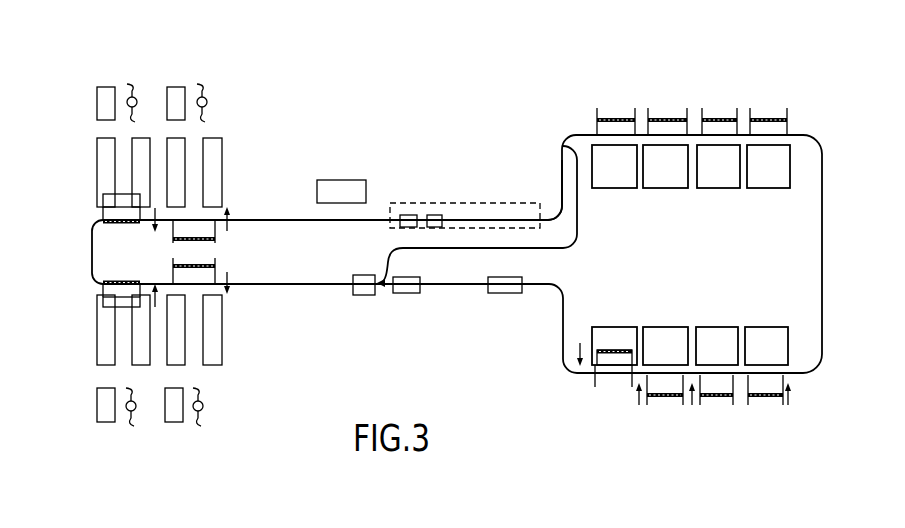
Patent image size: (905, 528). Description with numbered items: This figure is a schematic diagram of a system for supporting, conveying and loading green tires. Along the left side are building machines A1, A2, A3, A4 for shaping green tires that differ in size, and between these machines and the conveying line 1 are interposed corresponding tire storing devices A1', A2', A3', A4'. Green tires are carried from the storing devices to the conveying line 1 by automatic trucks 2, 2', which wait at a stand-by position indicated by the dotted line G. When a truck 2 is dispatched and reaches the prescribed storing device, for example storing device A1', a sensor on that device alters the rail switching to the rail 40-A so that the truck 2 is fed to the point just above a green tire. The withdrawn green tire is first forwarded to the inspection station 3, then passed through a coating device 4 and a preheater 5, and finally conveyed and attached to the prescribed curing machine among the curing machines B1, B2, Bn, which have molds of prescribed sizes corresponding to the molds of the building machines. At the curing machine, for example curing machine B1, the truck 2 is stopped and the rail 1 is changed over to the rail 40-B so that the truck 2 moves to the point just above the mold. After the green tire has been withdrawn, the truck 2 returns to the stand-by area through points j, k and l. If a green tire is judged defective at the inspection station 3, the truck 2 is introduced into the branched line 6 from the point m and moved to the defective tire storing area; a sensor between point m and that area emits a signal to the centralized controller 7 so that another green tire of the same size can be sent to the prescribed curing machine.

The conveying line 1 is at (277, 286).
The automatic truck 2 is at (408, 199).
The automatic truck 2' is at (439, 199).
The inspection station 3 is at (358, 297).
The coating device 4 is at (417, 295).
The preheater 5 is at (503, 295).
The branched line 6 is at (578, 222).
The centralized controller 7 is at (344, 182).
The stand-by position G is at (465, 204).
The point k is at (683, 121).
The point l is at (555, 190).
The point m is at (378, 268).
The point j is at (689, 254).
The building machine A1 is at (95, 419).
The building machine A2 is at (171, 419).
The building machine A3 is at (107, 89).
The building machine A4 is at (180, 89).
The tire storing device A1' is at (102, 330).
The tire storing device A2' is at (219, 330).
The tire storing device A3' is at (102, 172).
The tire storing device A4' is at (216, 172).
The rail 40-A is at (103, 287).
The rail 40-B is at (608, 377).
The curing machine B1 is at (612, 332).
The curing machine B2 is at (663, 332).
The curing machine Bn is at (768, 183).